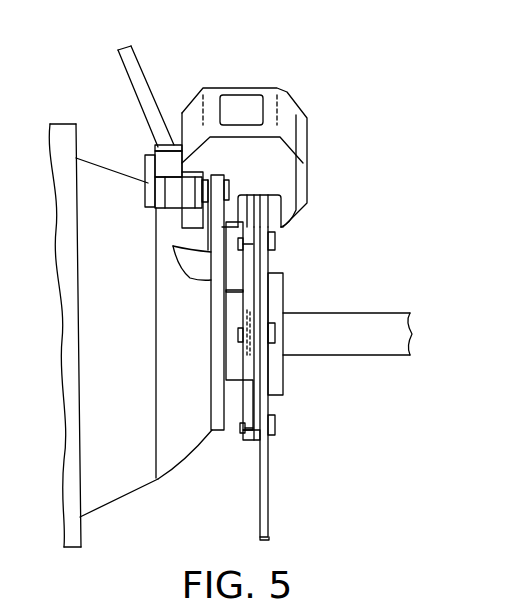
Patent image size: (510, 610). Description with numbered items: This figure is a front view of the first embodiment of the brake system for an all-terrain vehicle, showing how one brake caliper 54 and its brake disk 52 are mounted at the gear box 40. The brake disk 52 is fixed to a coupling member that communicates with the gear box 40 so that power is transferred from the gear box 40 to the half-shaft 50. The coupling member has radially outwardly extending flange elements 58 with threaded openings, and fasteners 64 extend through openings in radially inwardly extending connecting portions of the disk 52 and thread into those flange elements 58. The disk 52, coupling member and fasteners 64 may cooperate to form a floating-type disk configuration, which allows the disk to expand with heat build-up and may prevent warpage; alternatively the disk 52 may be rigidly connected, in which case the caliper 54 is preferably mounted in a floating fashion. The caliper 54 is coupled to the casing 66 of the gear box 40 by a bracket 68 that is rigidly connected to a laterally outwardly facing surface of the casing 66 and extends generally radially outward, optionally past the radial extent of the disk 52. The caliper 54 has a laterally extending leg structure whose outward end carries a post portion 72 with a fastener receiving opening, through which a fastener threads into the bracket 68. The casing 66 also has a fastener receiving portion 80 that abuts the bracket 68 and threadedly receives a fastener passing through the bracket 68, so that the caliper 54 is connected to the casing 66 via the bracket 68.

The gear box 40 is at (127, 505).
The half-shaft 50 is at (362, 337).
The brake disk 52 is at (270, 515).
The brake caliper 54 is at (270, 97).
The flange element 58 is at (248, 243).
The fastener 64 is at (275, 235).
The casing 66 is at (151, 367).
The bracket 68 is at (212, 213).
The post portion 72 is at (180, 187).
The fastener receiving portion 80 is at (187, 263).